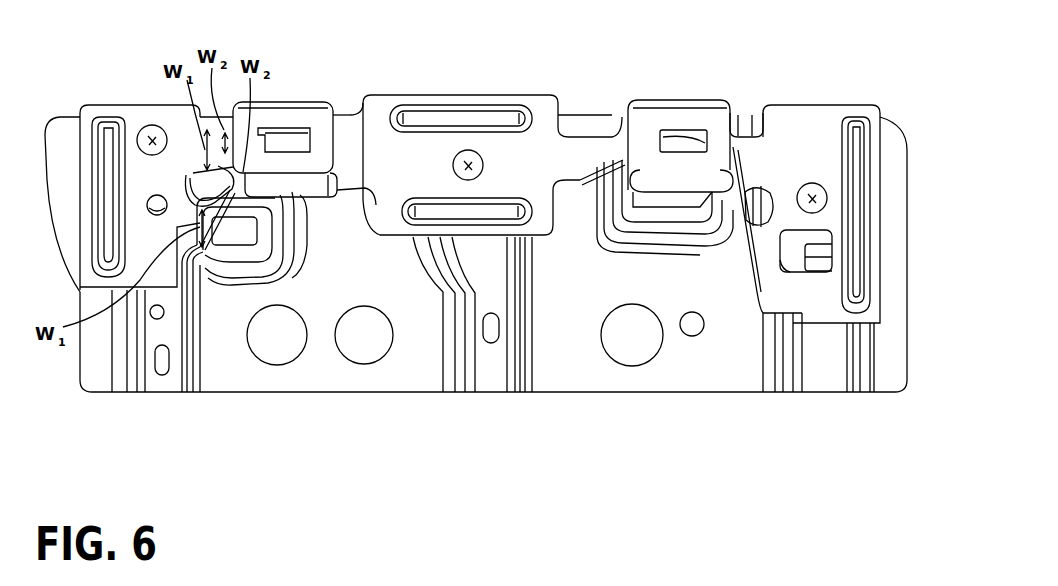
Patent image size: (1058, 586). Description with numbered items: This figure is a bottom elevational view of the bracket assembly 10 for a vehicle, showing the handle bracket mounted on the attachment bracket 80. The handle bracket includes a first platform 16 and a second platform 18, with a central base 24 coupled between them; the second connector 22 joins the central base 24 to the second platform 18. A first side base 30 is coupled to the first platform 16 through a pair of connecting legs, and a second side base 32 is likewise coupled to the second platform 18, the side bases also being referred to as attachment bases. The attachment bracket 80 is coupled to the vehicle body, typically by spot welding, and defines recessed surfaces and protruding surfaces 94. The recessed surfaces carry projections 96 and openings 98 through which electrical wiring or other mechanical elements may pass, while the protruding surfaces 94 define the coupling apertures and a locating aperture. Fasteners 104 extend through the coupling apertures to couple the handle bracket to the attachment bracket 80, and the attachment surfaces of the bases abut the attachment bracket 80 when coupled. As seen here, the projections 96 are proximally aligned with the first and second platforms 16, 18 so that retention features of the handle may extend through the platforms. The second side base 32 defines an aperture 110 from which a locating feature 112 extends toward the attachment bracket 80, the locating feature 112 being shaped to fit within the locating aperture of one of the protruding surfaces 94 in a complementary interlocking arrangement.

The bracket assembly 10 is at (62, 72).
The first platform 16 is at (278, 118).
The second platform 18 is at (697, 118).
The second connector 22 is at (603, 143).
The central base 24 is at (390, 158).
The first side base 30 is at (173, 125).
The second side base 32 is at (805, 138).
The attachment bracket 80 is at (548, 365).
The protruding surfaces 94 is at (170, 380).
The projections 96 is at (237, 260).
The openings 98 is at (287, 348).
The fasteners 104 is at (150, 130).
The aperture 110 is at (790, 257).
The locating feature 112 is at (820, 248).